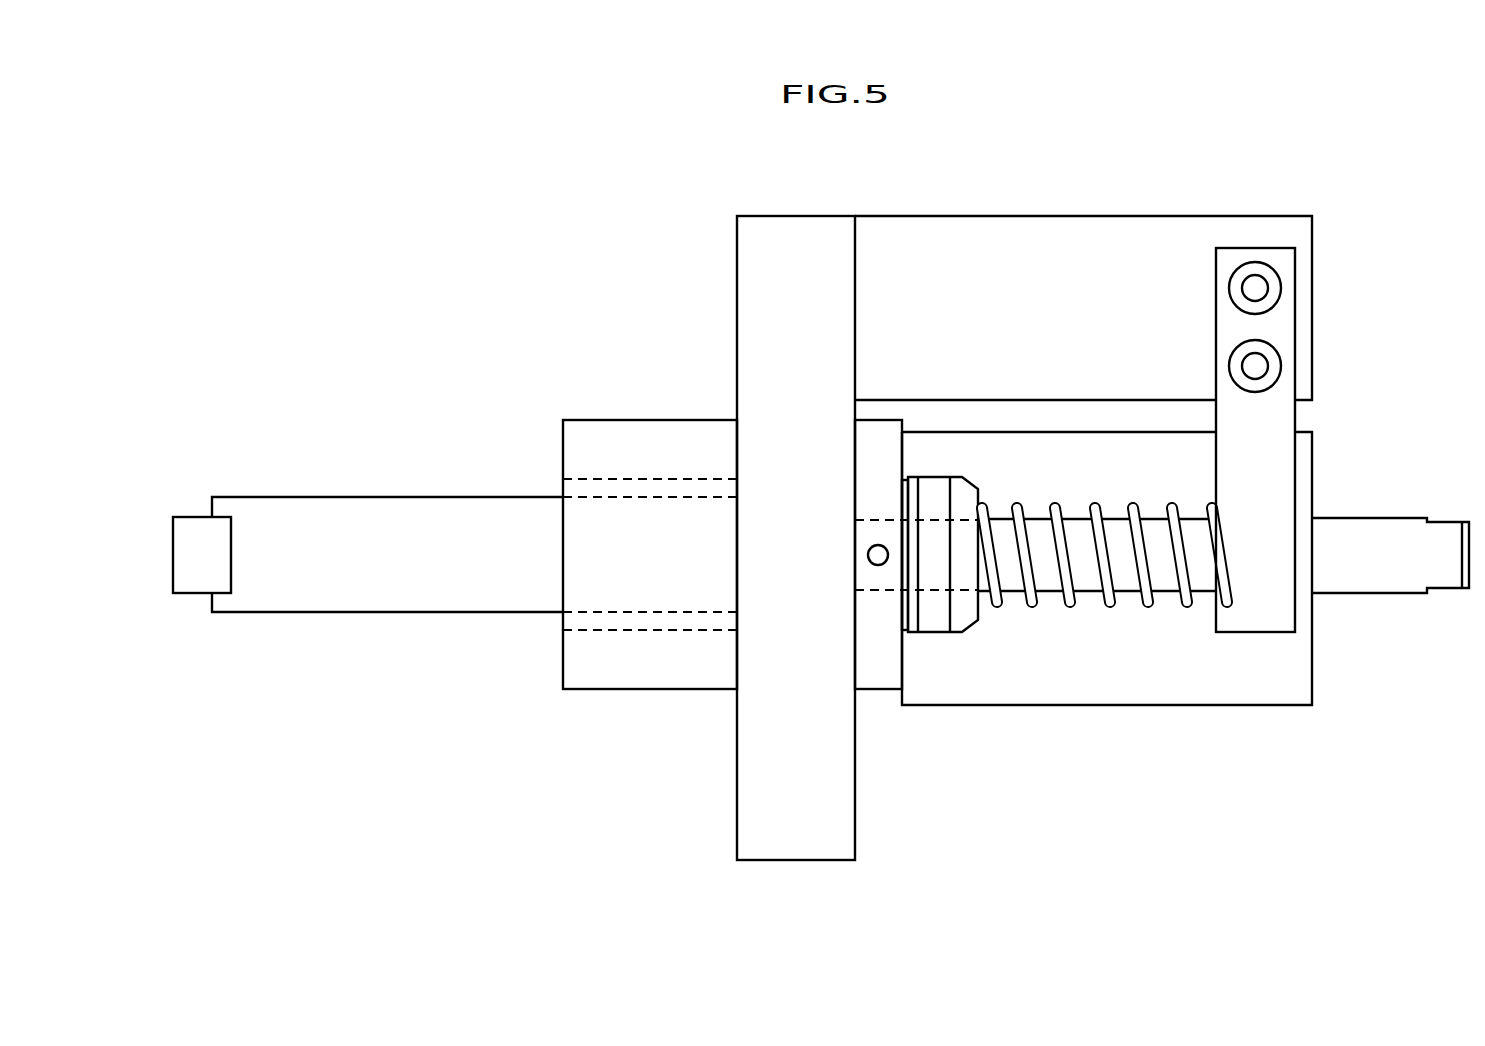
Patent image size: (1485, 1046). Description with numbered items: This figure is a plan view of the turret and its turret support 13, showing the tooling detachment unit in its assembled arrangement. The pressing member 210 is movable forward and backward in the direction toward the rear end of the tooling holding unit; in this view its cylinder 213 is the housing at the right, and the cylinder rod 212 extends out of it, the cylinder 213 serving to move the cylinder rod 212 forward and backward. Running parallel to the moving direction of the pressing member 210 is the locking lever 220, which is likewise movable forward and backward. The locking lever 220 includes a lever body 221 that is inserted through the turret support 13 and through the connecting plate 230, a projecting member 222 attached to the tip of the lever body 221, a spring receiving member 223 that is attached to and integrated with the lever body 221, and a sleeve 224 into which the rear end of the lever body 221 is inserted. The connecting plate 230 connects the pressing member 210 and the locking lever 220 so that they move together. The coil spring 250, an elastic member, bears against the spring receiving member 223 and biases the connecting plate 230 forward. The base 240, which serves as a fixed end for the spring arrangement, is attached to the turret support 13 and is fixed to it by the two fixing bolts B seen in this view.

The turret support 13 is at (828, 232).
The locking lever 220 is at (329, 534).
The lever body 221 is at (365, 605).
The projecting member 222 is at (195, 557).
The spring receiving member 223 is at (934, 624).
The sleeve 224 is at (1133, 580).
The coil spring 250 is at (1056, 500).
The connecting plate 230 is at (878, 684).
The pressing member 210 is at (1162, 532).
The cylinder 213 is at (1288, 690).
The base 240 is at (1300, 440).
The fixing bolts B is at (1262, 366).
The cylinder rod 212 is at (1380, 578).